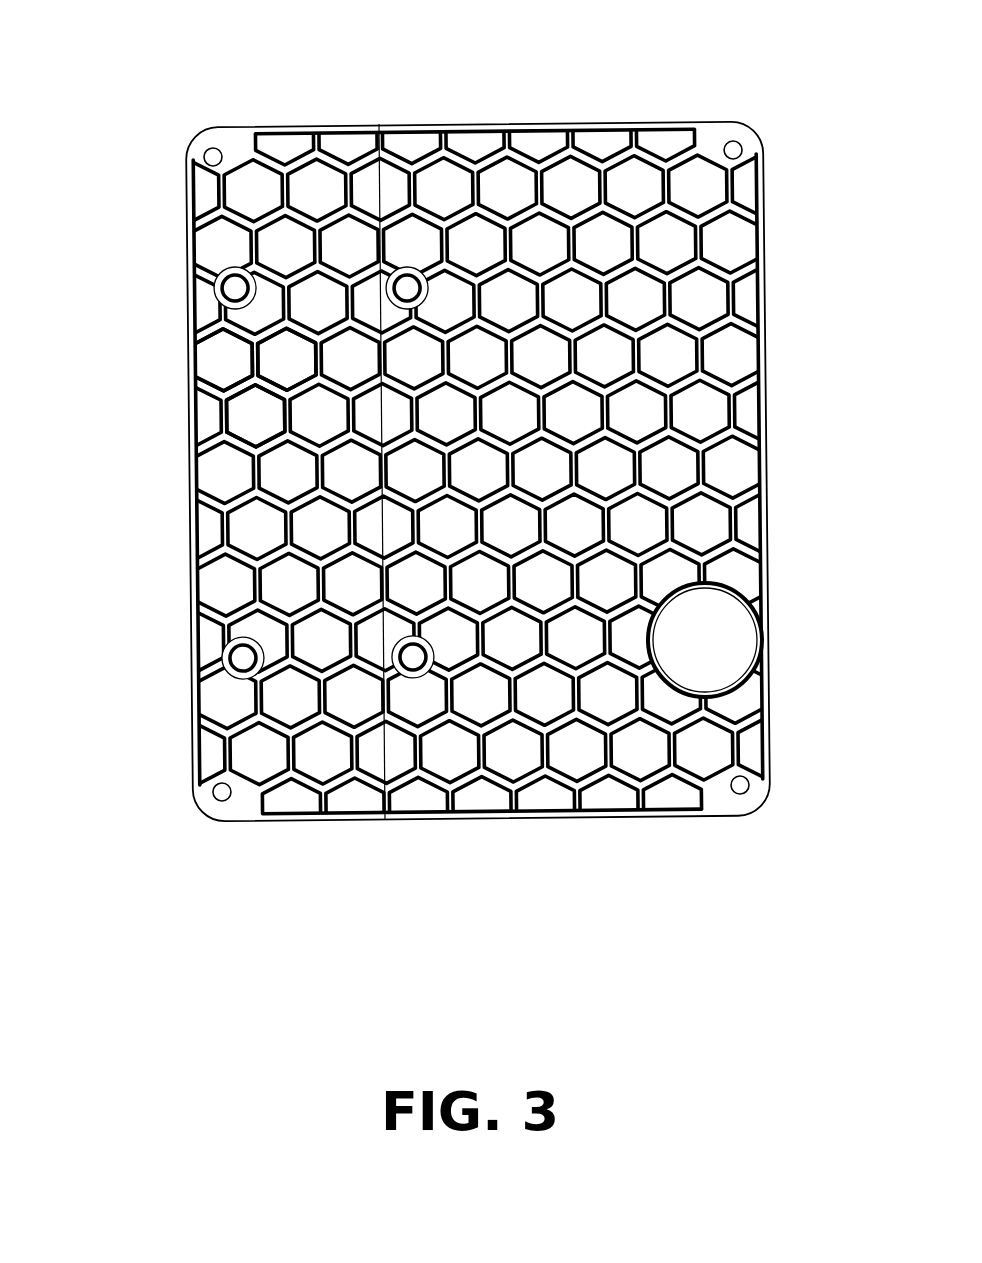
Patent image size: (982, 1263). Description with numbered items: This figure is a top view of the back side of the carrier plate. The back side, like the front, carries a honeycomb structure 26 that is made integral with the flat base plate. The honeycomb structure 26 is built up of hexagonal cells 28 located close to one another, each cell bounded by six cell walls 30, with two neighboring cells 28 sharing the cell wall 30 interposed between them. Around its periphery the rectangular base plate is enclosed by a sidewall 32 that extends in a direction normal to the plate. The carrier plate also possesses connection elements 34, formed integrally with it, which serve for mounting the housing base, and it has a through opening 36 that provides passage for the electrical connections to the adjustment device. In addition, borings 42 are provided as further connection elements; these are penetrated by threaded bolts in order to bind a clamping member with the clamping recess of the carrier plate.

The honeycomb structure 26 is at (186, 531).
The hexagonal cell 28 is at (258, 420).
The cell wall 30 is at (240, 361).
The sidewall 32 is at (279, 822).
The connection element 34 is at (204, 151).
The through opening 36 is at (722, 622).
The boring 42 is at (407, 290).